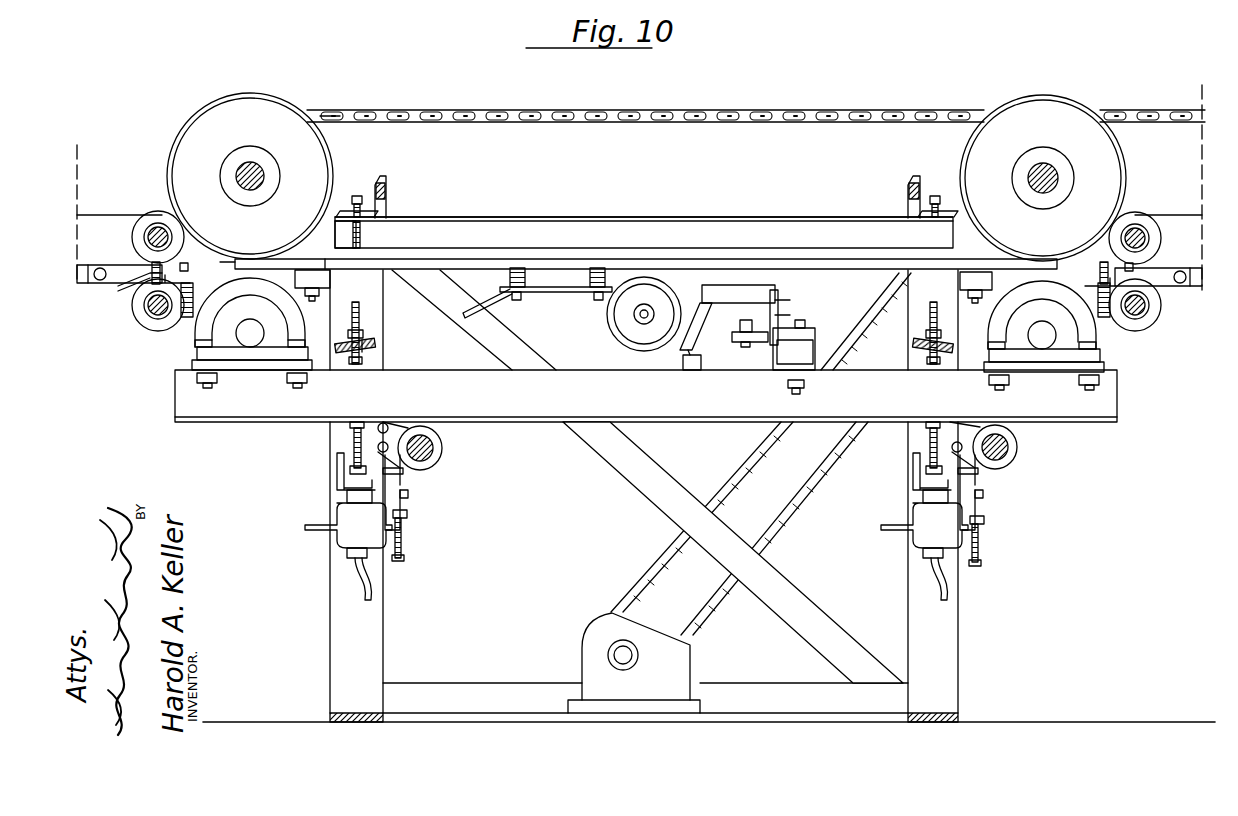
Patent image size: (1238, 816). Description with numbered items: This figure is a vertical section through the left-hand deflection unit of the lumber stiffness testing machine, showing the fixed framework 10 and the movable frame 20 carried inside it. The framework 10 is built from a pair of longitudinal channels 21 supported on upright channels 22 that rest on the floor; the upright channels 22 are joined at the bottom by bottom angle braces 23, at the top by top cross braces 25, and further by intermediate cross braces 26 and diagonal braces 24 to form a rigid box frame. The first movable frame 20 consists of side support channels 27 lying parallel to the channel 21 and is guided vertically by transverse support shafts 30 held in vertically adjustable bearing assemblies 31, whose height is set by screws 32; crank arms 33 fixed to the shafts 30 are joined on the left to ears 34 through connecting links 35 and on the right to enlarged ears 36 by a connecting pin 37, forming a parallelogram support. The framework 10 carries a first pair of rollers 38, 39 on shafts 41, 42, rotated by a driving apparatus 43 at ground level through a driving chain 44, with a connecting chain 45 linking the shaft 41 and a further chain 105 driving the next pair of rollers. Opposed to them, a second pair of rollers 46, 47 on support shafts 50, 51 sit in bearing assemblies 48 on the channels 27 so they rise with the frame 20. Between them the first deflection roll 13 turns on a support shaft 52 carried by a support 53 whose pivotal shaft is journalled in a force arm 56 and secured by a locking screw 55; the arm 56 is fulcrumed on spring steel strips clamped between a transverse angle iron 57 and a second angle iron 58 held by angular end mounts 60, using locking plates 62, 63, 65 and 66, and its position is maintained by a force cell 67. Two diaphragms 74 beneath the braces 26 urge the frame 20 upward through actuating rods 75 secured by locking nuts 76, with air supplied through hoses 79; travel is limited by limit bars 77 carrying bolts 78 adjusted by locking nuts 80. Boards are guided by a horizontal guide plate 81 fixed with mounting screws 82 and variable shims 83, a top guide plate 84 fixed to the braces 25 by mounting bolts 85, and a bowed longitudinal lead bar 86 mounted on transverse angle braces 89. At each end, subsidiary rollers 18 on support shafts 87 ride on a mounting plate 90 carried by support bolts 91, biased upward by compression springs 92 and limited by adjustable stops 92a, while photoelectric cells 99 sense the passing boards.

The framework 10 is at (446, 211).
The first deflection roll 13 is at (610, 332).
The subsidiary rollers 18 is at (157, 212).
The first movable frame 20 is at (518, 423).
The longitudinal channels 21 is at (532, 217).
The upright channels 22 is at (330, 652).
The bottom angle braces 23 is at (466, 683).
The diagonal braces 24 is at (616, 474).
The top cross braces 25 is at (381, 193).
The intermediate cross braces 26 is at (337, 482).
The side support channels 27 is at (522, 409).
The transverse support shafts 30 is at (437, 445).
The vertically adjustable bearing assemblies 31 is at (428, 474).
The screws 32 is at (407, 558).
The crank arms 33 is at (686, 474).
The ears 34 is at (383, 422).
The connecting links 35 is at (391, 424).
The enlarged ears 36 is at (958, 422).
The connecting pin 37 is at (961, 441).
The roller 38 is at (185, 128).
The roller 39 is at (963, 150).
The shaft 41 is at (265, 180).
The shaft 42 is at (1028, 177).
The driving apparatus 43 is at (588, 638).
The driving chain 44 is at (650, 578).
The connecting chain 45 is at (632, 119).
The roller 46 is at (196, 337).
The roller 47 is at (1100, 340).
The bearing assemblies 48 is at (194, 356).
The support shaft 50 is at (253, 338).
The support shaft 51 is at (1035, 344).
The support shaft 52 is at (641, 320).
The support 53 is at (684, 293).
The locking screw 55 is at (782, 300).
The force arm 56 is at (760, 285).
The transverse angle iron 57 is at (742, 334).
The transverse angle iron 58 is at (808, 339).
The angular end mounts 60 is at (806, 359).
The locking plate 62 is at (785, 310).
The locking plate 63 is at (772, 373).
The locking plate 65 is at (808, 327).
The locking plate 66 is at (748, 350).
The force cell 67 is at (681, 361).
The diaphragms 74 is at (340, 537).
The actuating rods 75 is at (353, 441).
The locking nuts 76 is at (350, 426).
The limit bars 77 is at (363, 344).
The bolts 78 is at (642, 332).
The hoses 79 is at (362, 592).
The locking nuts 80 is at (346, 349).
The horizontal guide plate 81 is at (556, 298).
The mounting screws 82 is at (500, 297).
The variable shims 83 is at (588, 279).
The top guide plate 84 is at (615, 228).
The mounting bolts 85 is at (357, 234).
The longitudinal lead bar 86 is at (323, 262).
The support shafts 87 is at (168, 242).
The transverse angle braces 89 is at (330, 297).
The mounting plate 90 is at (190, 283).
The support bolts 91 is at (642, 266).
The compression springs 92 is at (196, 312).
The adjustable stops 92a is at (140, 283).
The photoelectric cells 99 is at (101, 267).
The chain 105 is at (1142, 106).